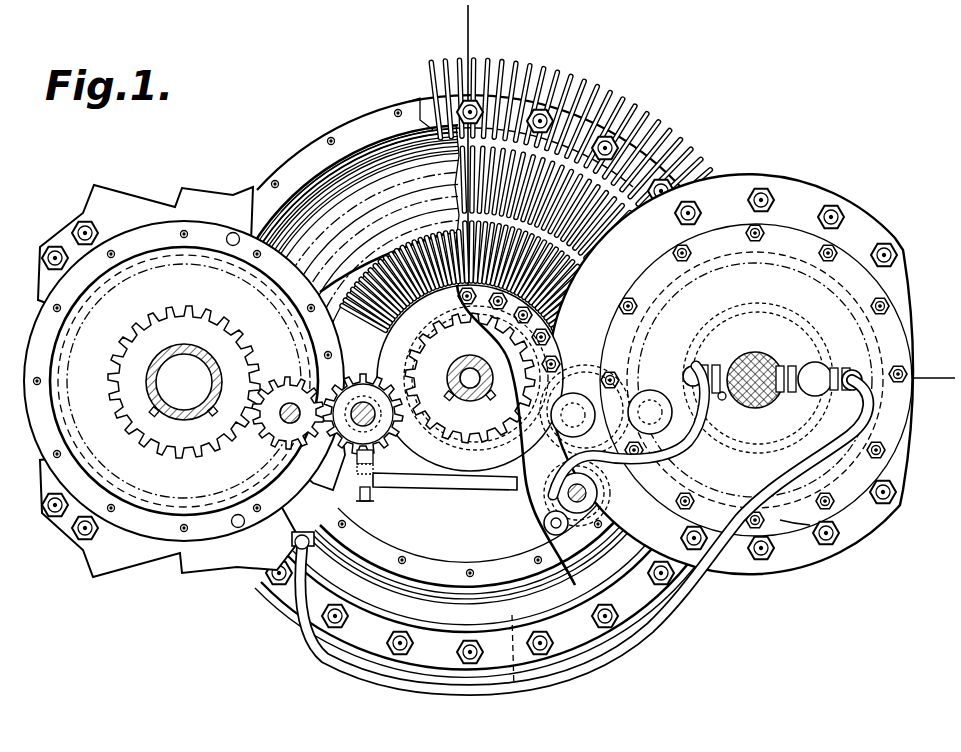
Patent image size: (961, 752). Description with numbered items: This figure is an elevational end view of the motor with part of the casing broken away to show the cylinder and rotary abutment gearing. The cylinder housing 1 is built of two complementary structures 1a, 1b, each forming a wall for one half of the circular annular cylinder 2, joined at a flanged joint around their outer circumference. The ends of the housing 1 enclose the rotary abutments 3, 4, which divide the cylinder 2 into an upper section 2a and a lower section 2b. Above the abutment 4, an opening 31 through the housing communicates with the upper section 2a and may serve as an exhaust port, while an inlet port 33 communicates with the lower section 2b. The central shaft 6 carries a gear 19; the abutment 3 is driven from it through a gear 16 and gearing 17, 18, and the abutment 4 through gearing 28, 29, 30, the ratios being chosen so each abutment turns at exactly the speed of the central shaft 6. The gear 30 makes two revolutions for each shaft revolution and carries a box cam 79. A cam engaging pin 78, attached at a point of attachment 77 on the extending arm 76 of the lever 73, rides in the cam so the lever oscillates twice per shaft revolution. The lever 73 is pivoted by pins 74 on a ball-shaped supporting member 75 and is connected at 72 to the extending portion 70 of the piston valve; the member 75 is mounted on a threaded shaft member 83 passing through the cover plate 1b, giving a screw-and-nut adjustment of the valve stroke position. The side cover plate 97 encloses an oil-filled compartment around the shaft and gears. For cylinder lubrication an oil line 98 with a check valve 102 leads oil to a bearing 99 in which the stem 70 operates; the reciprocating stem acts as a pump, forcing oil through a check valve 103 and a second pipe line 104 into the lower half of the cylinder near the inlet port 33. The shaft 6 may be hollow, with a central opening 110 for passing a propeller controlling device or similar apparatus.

The cylinder housing 1 is at (467, 405).
The complementary housing structure 1a is at (280, 163).
The complementary housing structure (cover plate) 1b is at (637, 150).
The circular annular cylinder 2 is at (378, 160).
The upper section of cylinder 2a is at (414, 150).
The lower section of cylinder 2b is at (520, 694).
The rotary abutment 3 is at (787, 262).
The rotary abutment 4 is at (204, 258).
The central shaft 6 is at (461, 369).
The gear 16 is at (805, 314).
The gearing 17 is at (650, 387).
The gearing 18 is at (499, 381).
The gear 19 is at (462, 446).
The gearing 28 is at (153, 440).
The gearing 29 is at (265, 440).
The gear 30 is at (371, 418).
The opening (exhaust port) 31 is at (160, 192).
The inlet port 33 is at (152, 566).
The extending portion (stem) of piston valve 70 is at (800, 362).
The connection 72 is at (750, 354).
The reciprocating member (lever) 73 is at (724, 402).
The pins 74 is at (553, 450).
The ball-shape supporting member (bearing member) 75 is at (540, 518).
The extending arm 76 is at (445, 480).
The point of attachment 77 is at (372, 493).
The cam engaging pin 78 is at (355, 468).
The box cam 79 is at (340, 428).
The threaded shaft member 83 is at (548, 538).
The cover plate 97 is at (800, 522).
The oil line 98 is at (680, 448).
The bearing 99 is at (762, 400).
The check valve 102 is at (697, 358).
The check valve 103 is at (820, 367).
The pipe line (second section) 104 is at (675, 620).
The central opening 110 is at (468, 402).